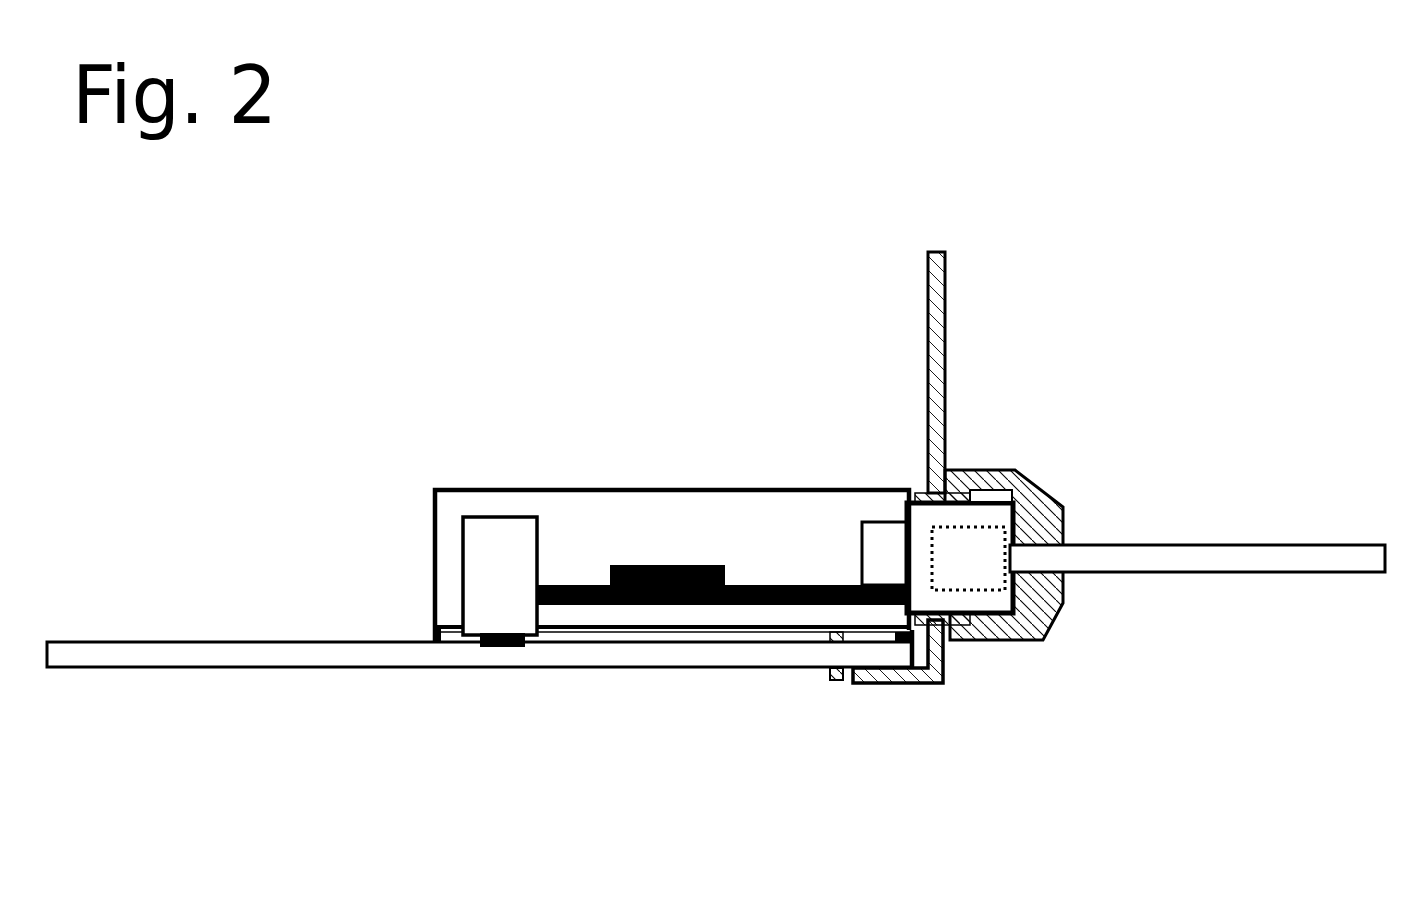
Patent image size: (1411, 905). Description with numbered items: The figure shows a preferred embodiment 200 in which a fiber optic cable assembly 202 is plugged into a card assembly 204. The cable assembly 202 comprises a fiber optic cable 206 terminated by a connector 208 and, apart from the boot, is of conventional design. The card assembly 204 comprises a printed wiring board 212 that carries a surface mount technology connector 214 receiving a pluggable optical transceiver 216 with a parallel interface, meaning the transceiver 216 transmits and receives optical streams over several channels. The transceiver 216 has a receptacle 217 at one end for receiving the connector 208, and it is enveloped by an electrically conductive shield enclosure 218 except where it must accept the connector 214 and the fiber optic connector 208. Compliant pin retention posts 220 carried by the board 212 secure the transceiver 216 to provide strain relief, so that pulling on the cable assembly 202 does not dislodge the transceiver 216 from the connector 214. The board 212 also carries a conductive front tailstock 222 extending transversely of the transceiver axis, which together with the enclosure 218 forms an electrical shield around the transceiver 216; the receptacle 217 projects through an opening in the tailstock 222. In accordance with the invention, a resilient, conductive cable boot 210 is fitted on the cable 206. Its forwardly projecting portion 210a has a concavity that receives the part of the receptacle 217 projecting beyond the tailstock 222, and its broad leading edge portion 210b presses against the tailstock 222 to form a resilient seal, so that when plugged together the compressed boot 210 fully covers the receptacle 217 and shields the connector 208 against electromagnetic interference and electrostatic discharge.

The preferred embodiment 200 is at (643, 148).
The fiber optic cable assembly 202 is at (1097, 357).
The card assembly 204 is at (680, 795).
The fiber optic cable 206 is at (1347, 558).
The connector 208 is at (975, 594).
The cable boot 210 is at (1045, 605).
The forwardly projecting portion 210a is at (987, 482).
The broad leading edge portion 210b is at (853, 361).
The printed wiring board 212 is at (240, 655).
The surface mount technology connector 214 is at (483, 528).
The pluggable optical transceiver 216 is at (605, 420).
The receptacle 217 is at (922, 518).
The electrically conductive shield enclosure 218 is at (751, 488).
The compliant pin retention post 220 is at (834, 682).
The conductive front tailstock 222 is at (910, 677).